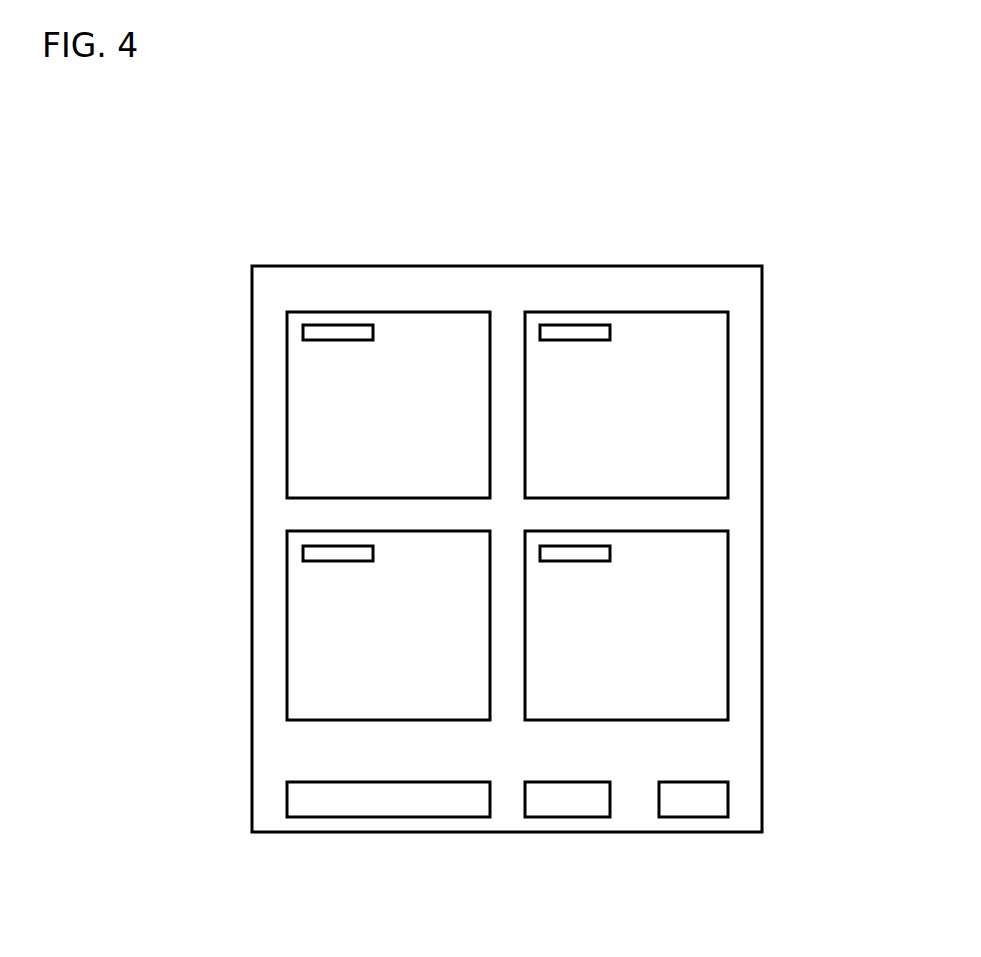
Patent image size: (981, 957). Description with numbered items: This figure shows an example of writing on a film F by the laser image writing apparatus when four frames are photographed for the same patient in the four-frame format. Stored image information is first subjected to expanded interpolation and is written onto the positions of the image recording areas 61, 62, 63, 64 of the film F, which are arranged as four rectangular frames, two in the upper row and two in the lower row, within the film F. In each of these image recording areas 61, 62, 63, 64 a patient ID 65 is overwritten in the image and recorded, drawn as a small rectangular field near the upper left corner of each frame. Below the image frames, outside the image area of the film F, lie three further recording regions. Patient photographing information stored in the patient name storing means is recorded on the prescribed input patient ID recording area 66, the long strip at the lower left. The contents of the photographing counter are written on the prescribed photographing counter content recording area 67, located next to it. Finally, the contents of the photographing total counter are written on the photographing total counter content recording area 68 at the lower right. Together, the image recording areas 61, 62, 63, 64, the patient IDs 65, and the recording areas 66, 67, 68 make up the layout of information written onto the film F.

The film F is at (762, 431).
The image recording area 61 is at (443, 332).
The image recording area 62 is at (675, 330).
The image recording area 63 is at (302, 651).
The image recording area 64 is at (718, 630).
The patient ID 65 is at (340, 332).
The input patient ID recording area 66 is at (398, 803).
The photographing counter content recording area 67 is at (562, 805).
The photographing total counter content recording area 68 is at (690, 807).